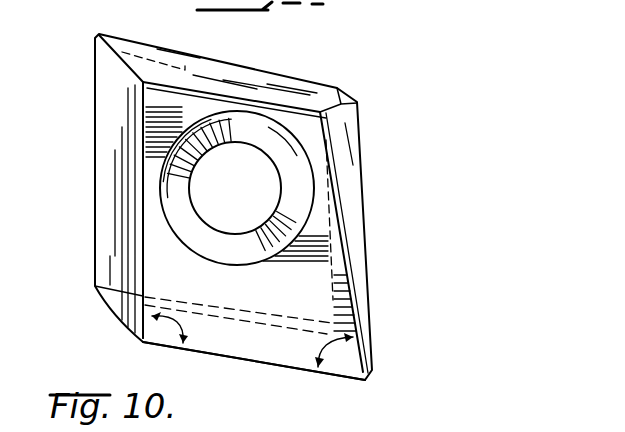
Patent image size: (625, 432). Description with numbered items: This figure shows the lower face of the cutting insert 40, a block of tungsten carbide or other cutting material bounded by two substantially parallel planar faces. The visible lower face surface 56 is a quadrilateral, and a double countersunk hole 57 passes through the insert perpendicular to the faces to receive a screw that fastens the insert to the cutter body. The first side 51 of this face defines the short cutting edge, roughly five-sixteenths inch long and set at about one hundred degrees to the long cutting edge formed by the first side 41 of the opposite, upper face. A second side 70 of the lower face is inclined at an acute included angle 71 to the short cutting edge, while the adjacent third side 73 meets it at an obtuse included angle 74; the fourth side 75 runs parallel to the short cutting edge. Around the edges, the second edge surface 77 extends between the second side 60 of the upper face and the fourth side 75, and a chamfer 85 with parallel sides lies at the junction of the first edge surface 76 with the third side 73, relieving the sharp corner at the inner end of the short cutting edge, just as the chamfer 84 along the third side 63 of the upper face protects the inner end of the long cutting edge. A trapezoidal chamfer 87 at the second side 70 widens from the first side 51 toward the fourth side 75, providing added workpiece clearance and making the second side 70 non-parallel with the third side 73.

The insert 40 is at (331, 81).
The first side of upper face surface 41 is at (95, 153).
The first side of lower face surface 51 is at (273, 368).
The lower face surface 56 is at (312, 280).
The double countersunk hole 57 is at (200, 158).
The second side of upper face surface 60 is at (185, 66).
The third side of upper face surface 63 is at (258, 312).
The second side of lower face surface 70 is at (355, 302).
The acute included angle 71 is at (338, 372).
The third side of lower face surface 73 is at (147, 288).
The obtuse included angle 74 is at (150, 336).
The fourth side of lower face surface 75 is at (162, 80).
The first edge surface 76 is at (110, 227).
The second edge surface 77 is at (258, 82).
The chamfer 84 is at (140, 300).
The chamfer 85 is at (138, 131).
The trapezoidal chamfer 87 is at (357, 176).